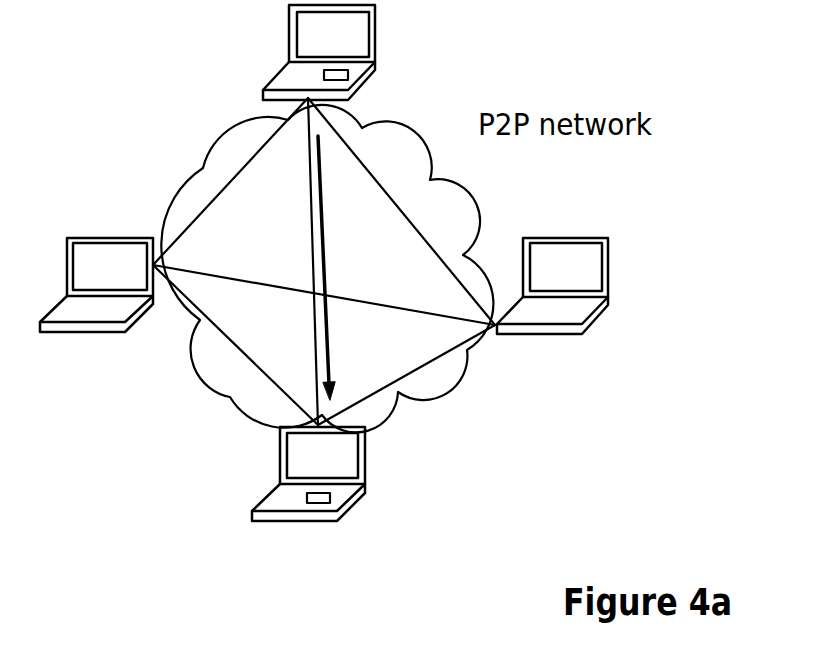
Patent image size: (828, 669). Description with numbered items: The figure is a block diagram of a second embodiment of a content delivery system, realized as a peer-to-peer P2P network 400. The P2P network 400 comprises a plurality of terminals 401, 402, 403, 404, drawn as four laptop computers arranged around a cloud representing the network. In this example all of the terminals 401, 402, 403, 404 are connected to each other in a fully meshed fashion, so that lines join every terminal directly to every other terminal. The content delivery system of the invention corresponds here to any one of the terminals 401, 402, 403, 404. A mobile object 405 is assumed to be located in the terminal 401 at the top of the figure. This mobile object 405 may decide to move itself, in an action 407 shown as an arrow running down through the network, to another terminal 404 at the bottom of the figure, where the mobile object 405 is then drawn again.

The P2P network 400 is at (453, 188).
The terminal 401 is at (375, 53).
The terminal 402 is at (99, 334).
The terminal 403 is at (553, 336).
The terminal 404 is at (310, 523).
The mobile object 405 is at (348, 74).
The action 407 is at (327, 275).